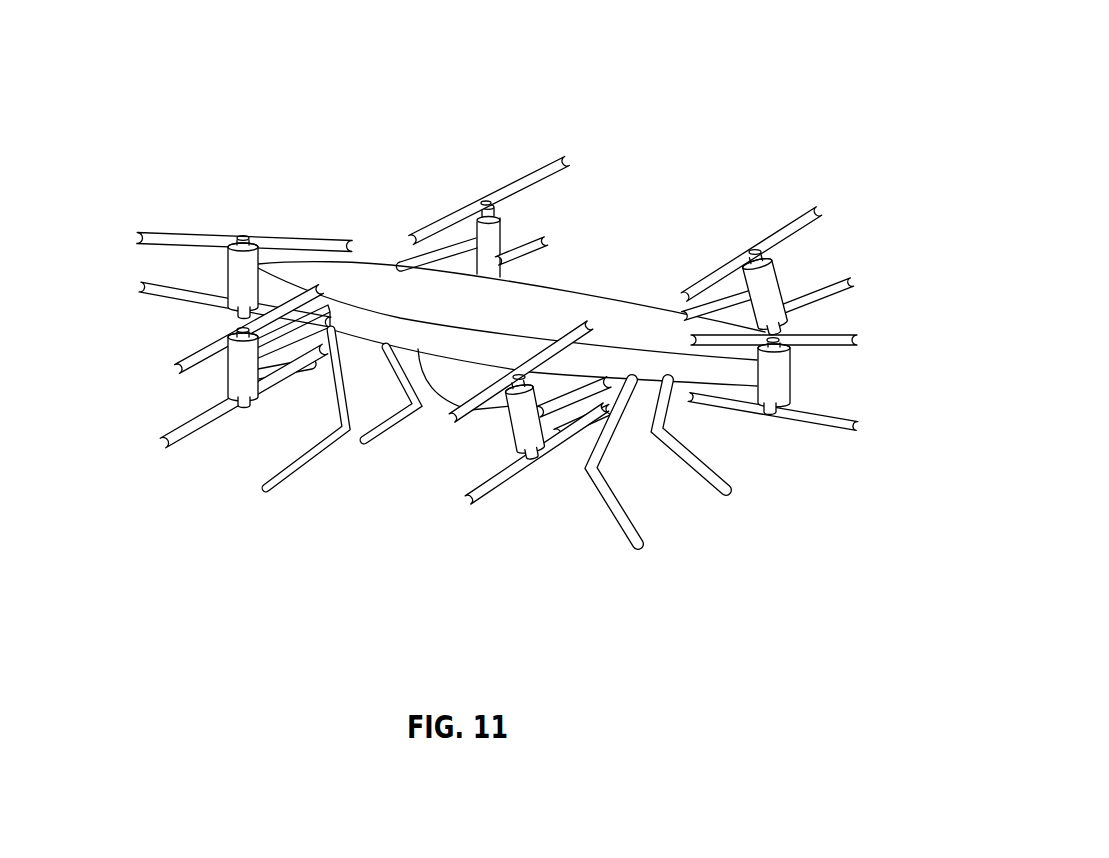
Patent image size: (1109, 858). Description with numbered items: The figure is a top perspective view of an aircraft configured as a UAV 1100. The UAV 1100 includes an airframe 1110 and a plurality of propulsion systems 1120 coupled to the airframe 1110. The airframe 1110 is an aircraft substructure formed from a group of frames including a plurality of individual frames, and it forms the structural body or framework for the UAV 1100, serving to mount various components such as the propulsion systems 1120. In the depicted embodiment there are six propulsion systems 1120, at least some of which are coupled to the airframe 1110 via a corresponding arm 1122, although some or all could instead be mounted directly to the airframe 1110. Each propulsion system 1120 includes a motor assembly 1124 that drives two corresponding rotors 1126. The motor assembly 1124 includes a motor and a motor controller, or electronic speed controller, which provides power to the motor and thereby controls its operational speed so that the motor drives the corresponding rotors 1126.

The UAV 1100 is at (688, 43).
The airframe 1110 is at (337, 283).
The propulsion system 1120 is at (243, 202).
The arm 1122 is at (277, 355).
The motor assembly 1124 is at (228, 281).
The rotor 1126 is at (158, 233).